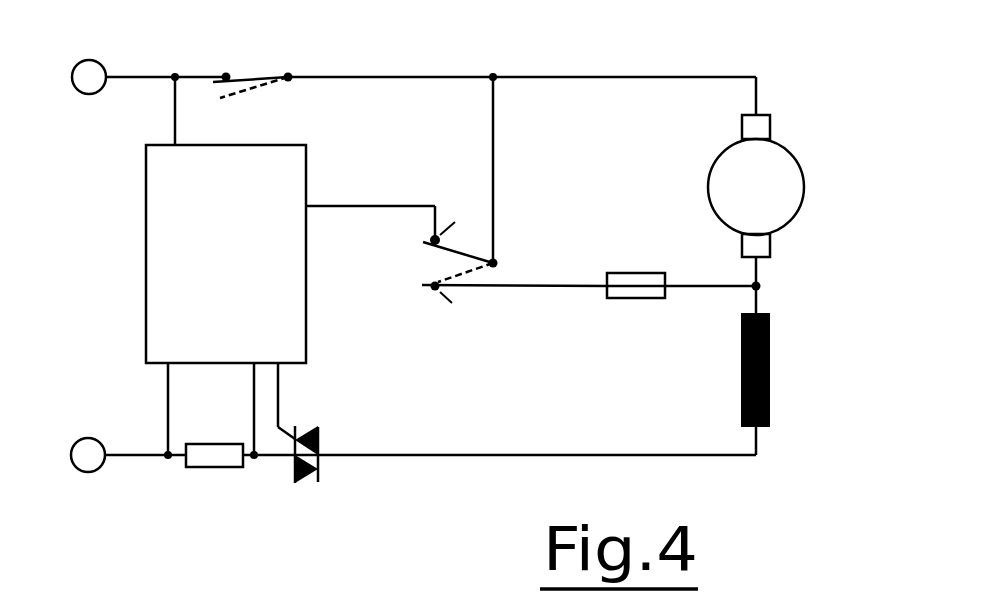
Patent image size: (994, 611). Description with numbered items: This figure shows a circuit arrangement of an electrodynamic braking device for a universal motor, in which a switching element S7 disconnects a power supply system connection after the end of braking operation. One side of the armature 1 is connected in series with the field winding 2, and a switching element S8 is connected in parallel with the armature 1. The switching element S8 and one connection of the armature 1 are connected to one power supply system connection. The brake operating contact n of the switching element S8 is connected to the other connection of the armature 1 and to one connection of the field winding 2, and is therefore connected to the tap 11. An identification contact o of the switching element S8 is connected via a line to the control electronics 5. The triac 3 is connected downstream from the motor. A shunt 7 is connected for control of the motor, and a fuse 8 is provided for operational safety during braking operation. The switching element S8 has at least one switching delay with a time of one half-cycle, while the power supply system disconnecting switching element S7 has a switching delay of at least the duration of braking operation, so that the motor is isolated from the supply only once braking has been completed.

The armature 1 is at (707, 172).
The field winding 2 is at (740, 350).
The triac 3 is at (300, 482).
The control electronics 5 is at (238, 269).
The shunt 7 is at (207, 468).
The fuse 8 is at (643, 300).
The tap 11 is at (760, 282).
The switching element S7 is at (293, 82).
The switching element S8 is at (505, 250).